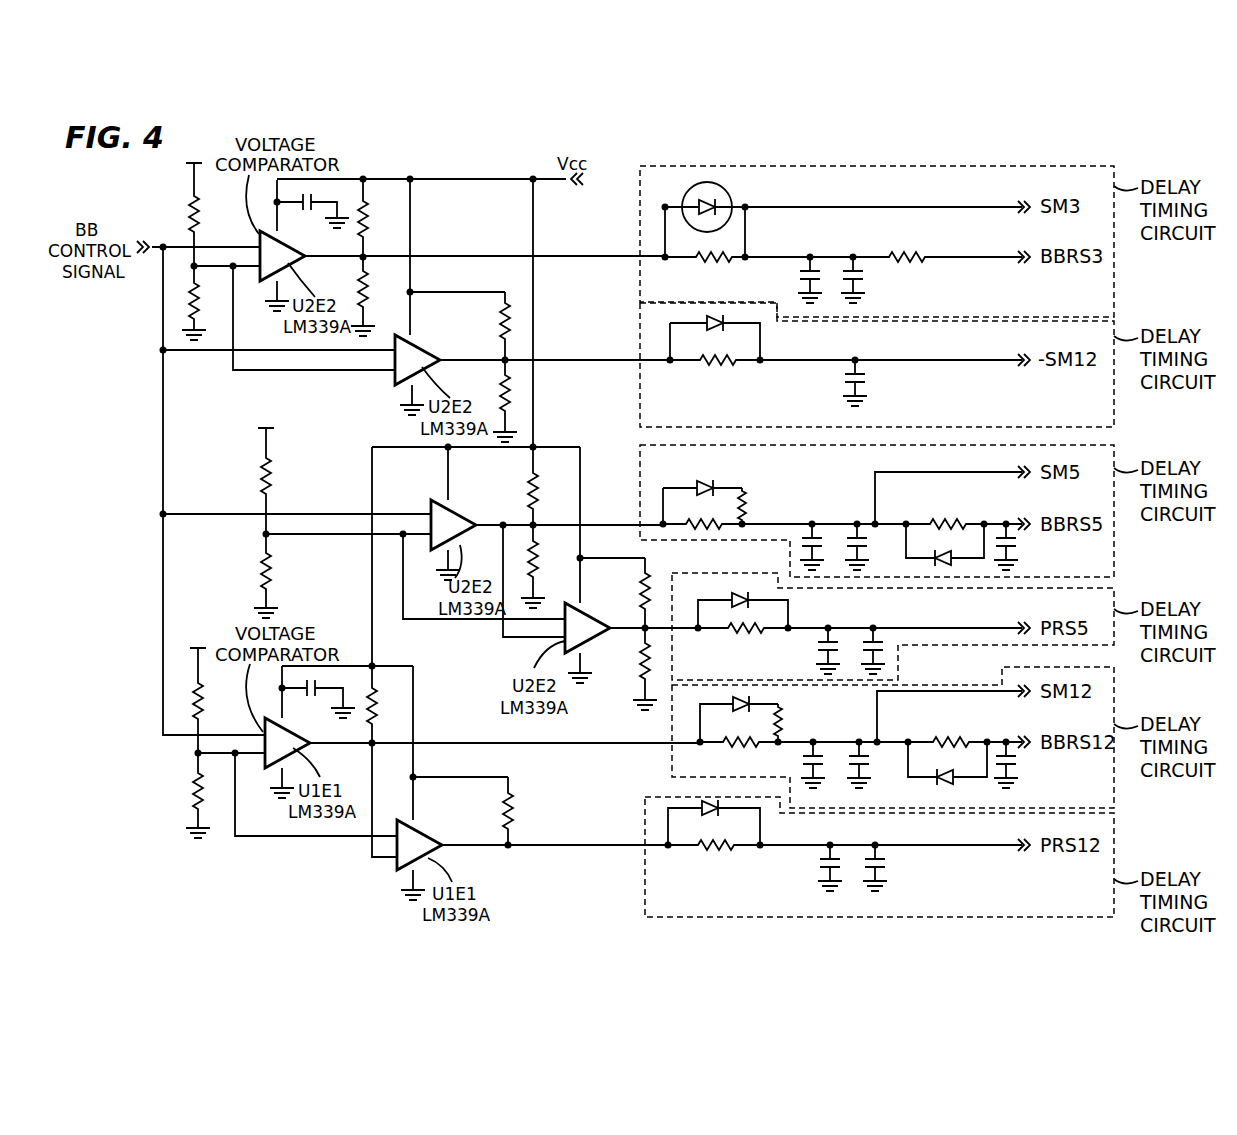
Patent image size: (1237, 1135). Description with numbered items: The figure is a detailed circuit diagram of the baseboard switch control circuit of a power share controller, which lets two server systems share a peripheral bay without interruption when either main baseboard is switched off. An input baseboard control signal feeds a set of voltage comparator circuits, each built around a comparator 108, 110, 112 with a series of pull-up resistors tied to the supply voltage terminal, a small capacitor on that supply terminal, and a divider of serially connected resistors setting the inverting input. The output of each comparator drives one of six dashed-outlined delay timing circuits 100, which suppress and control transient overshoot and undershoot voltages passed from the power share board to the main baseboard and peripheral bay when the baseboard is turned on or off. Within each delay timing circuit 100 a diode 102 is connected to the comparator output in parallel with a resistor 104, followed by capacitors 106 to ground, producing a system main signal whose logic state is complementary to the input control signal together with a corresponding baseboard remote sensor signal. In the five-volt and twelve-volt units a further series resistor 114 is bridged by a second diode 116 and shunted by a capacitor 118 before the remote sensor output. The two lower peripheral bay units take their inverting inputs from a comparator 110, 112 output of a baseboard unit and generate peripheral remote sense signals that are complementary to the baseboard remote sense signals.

The delay timing circuit 100 is at (1044, 147).
The diode 102 is at (731, 194).
The resistor 104 is at (712, 263).
The capacitor 106 is at (833, 272).
The voltage comparator 108 is at (287, 254).
The voltage comparator 110 is at (468, 522).
The voltage comparator 112 is at (294, 743).
The resistor 114 is at (910, 253).
The diode 116 is at (946, 552).
The capacitor 118 is at (1018, 539).